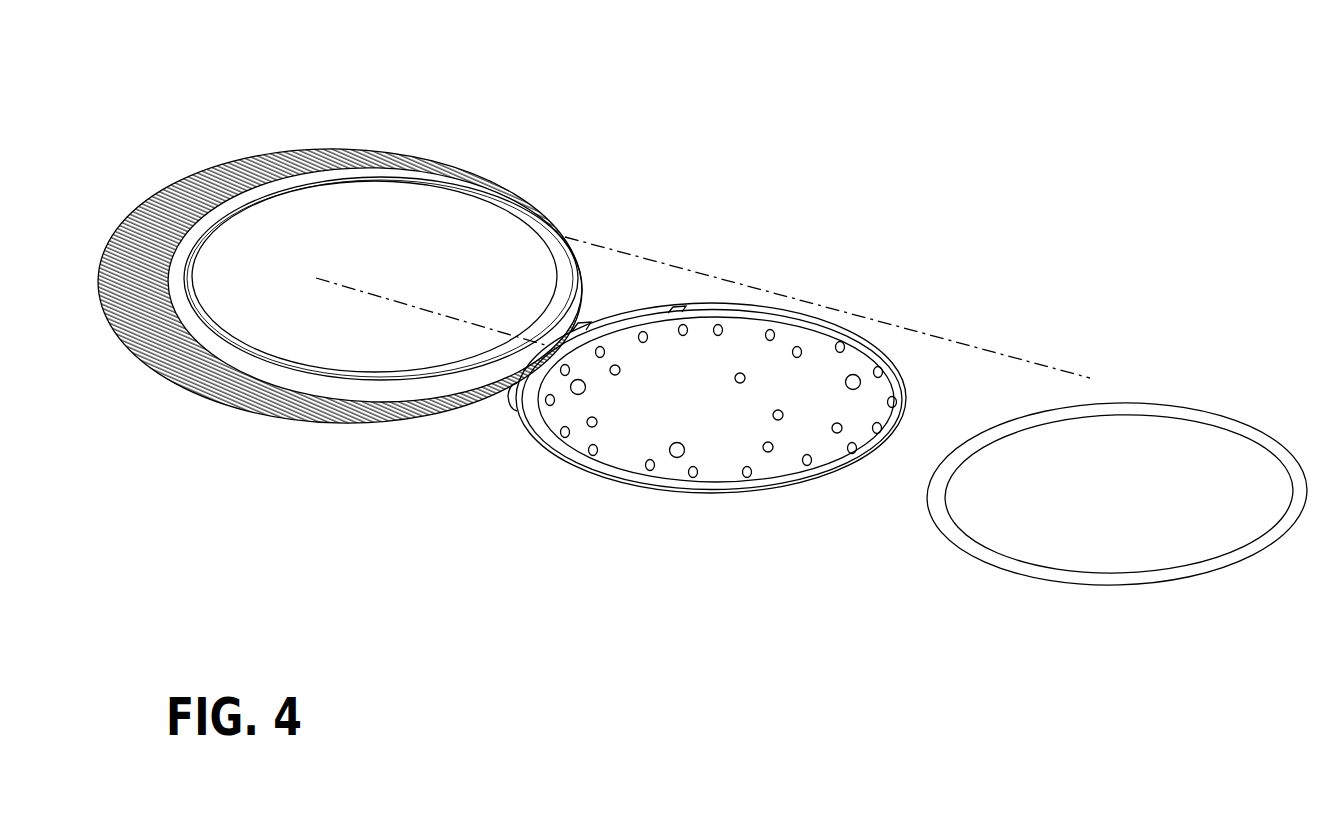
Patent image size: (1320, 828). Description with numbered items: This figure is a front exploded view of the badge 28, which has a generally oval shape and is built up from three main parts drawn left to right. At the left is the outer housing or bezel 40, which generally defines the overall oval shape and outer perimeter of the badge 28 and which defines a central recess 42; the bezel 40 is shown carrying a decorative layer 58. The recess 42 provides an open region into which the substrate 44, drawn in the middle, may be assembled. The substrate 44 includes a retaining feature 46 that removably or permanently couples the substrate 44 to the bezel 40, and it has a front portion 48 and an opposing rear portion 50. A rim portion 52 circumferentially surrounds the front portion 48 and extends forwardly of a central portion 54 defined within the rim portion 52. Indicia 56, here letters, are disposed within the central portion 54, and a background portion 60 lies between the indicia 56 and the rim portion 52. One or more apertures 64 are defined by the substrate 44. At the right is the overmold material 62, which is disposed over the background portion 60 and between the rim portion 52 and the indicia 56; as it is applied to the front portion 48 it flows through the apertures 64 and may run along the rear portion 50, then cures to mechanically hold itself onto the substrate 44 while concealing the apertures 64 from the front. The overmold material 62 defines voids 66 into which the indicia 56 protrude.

The badge 28 is at (701, 334).
The bezel 40 is at (339, 300).
The central recess 42 is at (380, 245).
The substrate 44 is at (697, 380).
The retaining feature 46 is at (585, 324).
The front portion 48 is at (858, 343).
The rear portion 50 is at (622, 308).
The rim portion 52 is at (693, 499).
The central portion 54 is at (630, 447).
The indicia 56 is at (775, 442).
The decorative layer 58 is at (317, 418).
The background portion 60 is at (865, 395).
The overmold material 62 is at (1117, 476).
The apertures 64 is at (576, 396).
The voids 66 is at (1230, 539).